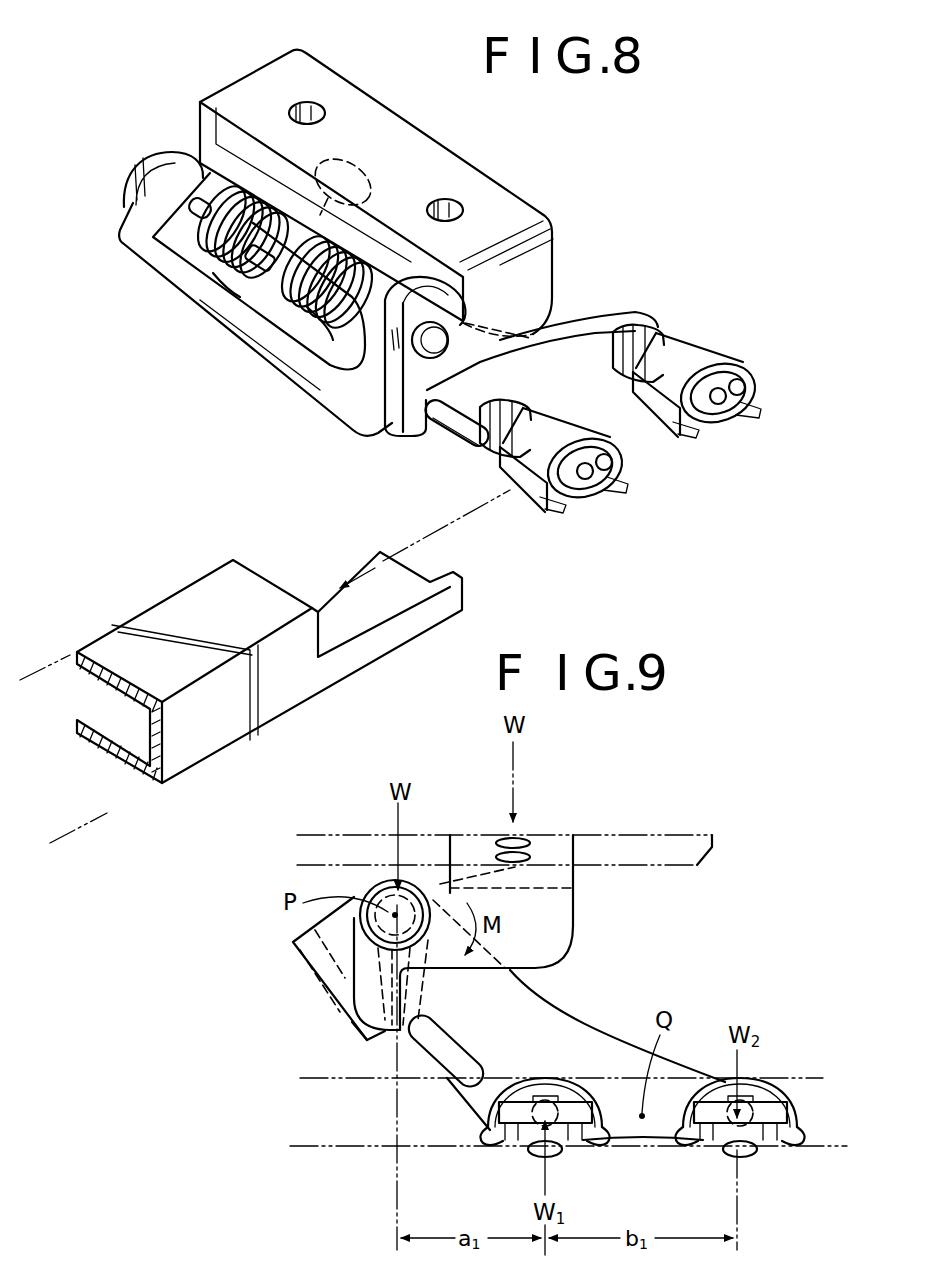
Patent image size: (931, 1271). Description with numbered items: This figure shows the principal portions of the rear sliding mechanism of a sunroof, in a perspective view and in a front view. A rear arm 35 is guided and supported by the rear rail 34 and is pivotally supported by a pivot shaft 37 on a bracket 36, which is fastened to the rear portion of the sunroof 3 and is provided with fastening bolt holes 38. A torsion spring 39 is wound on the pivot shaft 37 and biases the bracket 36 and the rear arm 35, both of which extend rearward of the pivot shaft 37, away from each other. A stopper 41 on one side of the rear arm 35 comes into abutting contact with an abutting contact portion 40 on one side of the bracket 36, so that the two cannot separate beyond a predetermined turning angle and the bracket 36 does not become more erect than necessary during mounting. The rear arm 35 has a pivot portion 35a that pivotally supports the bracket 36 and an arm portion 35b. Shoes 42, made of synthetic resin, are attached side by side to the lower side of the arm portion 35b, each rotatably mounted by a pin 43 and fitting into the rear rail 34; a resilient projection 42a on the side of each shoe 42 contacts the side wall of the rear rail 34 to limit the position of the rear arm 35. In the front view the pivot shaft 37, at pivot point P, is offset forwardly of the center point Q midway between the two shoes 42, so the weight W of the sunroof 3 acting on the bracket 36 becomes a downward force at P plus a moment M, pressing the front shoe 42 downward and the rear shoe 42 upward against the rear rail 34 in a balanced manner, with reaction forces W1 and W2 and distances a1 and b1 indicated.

In FIG. 9, the sunroof 3 is at (681, 833).
In FIG. 8, the rear rail 34 is at (180, 610).
In FIG. 9, the rear rail 34 is at (777, 1078).
In FIG. 8, the rear arm 35 is at (255, 314).
In FIG. 9, the rear arm 35 is at (317, 972).
In FIG. 8, the pivot portion 35a is at (258, 357).
In FIG. 9, the pivot portion 35a is at (310, 962).
In FIG. 8, the arm portion 35b is at (548, 355).
In FIG. 9, the arm portion 35b is at (487, 1050).
In FIG. 8, the bracket 36 is at (428, 160).
In FIG. 9, the bracket 36 is at (568, 848).
In FIG. 8, the pivot shaft 37 is at (247, 327).
In FIG. 9, the pivot shaft 37 is at (361, 892).
In FIG. 8, the fastening bolt holes 38 is at (320, 107).
In FIG. 9, the fastening bolt holes 38 is at (520, 838).
In FIG. 8, the torsion spring 39 is at (288, 372).
In FIG. 9, the torsion spring 39 is at (297, 940).
In FIG. 8, the abutting contact portion 40 is at (380, 436).
In FIG. 9, the abutting contact portion 40 is at (352, 1022).
In FIG. 8, the stopper 41 is at (455, 430).
In FIG. 9, the stopper 41 is at (440, 1052).
In FIG. 8, the shoe 42 is at (636, 445).
In FIG. 9, the shoe 42 is at (633, 1144).
In FIG. 8, the resilient projection 42a is at (613, 490).
In FIG. 9, the resilient projection 42a is at (503, 1140).
In FIG. 9, the pin 43 is at (565, 1152).